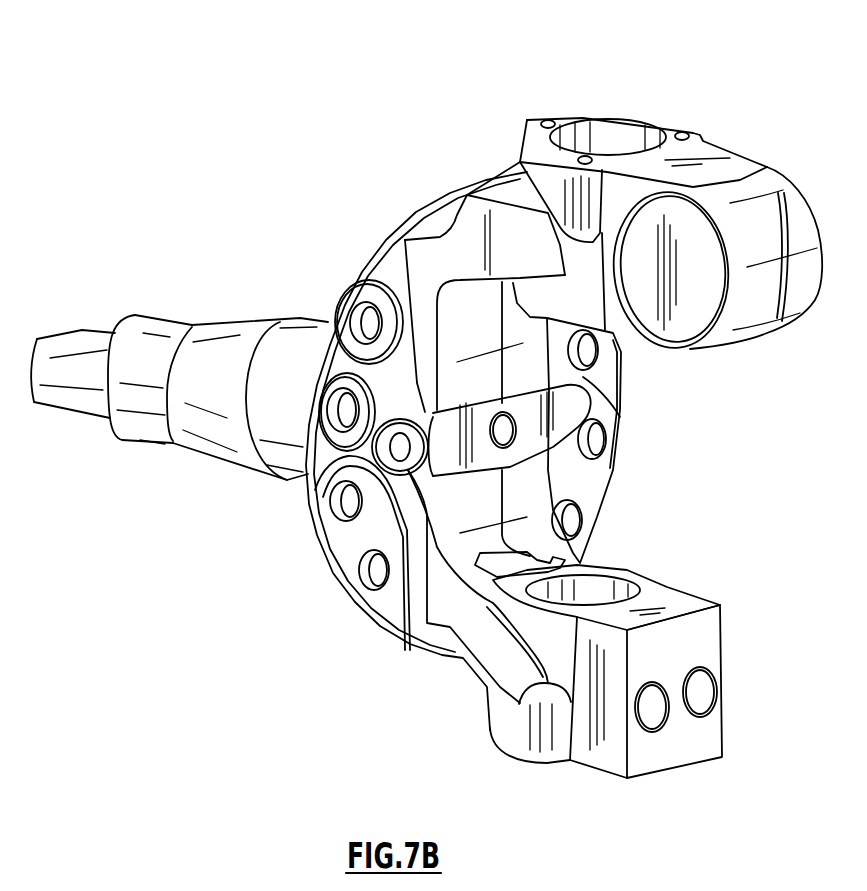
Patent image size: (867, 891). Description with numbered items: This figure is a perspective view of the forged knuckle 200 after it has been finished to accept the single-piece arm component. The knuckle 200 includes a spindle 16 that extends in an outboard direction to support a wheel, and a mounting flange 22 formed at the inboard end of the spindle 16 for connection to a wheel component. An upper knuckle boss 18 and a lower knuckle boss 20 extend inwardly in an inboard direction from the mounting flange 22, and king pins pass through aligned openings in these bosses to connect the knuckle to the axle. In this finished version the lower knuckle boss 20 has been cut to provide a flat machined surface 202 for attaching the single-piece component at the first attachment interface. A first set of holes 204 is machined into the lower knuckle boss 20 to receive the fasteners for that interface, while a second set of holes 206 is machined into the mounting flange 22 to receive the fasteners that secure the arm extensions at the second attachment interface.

The forged knuckle 200 is at (710, 90).
The spindle 16 is at (230, 418).
The mounting flange 22 is at (337, 363).
The second set of holes 206 is at (580, 512).
The upper knuckle boss 18 is at (757, 297).
The flat machined surface 202 is at (700, 656).
The first set of holes 204 is at (700, 716).
The lower knuckle boss 20 is at (603, 757).